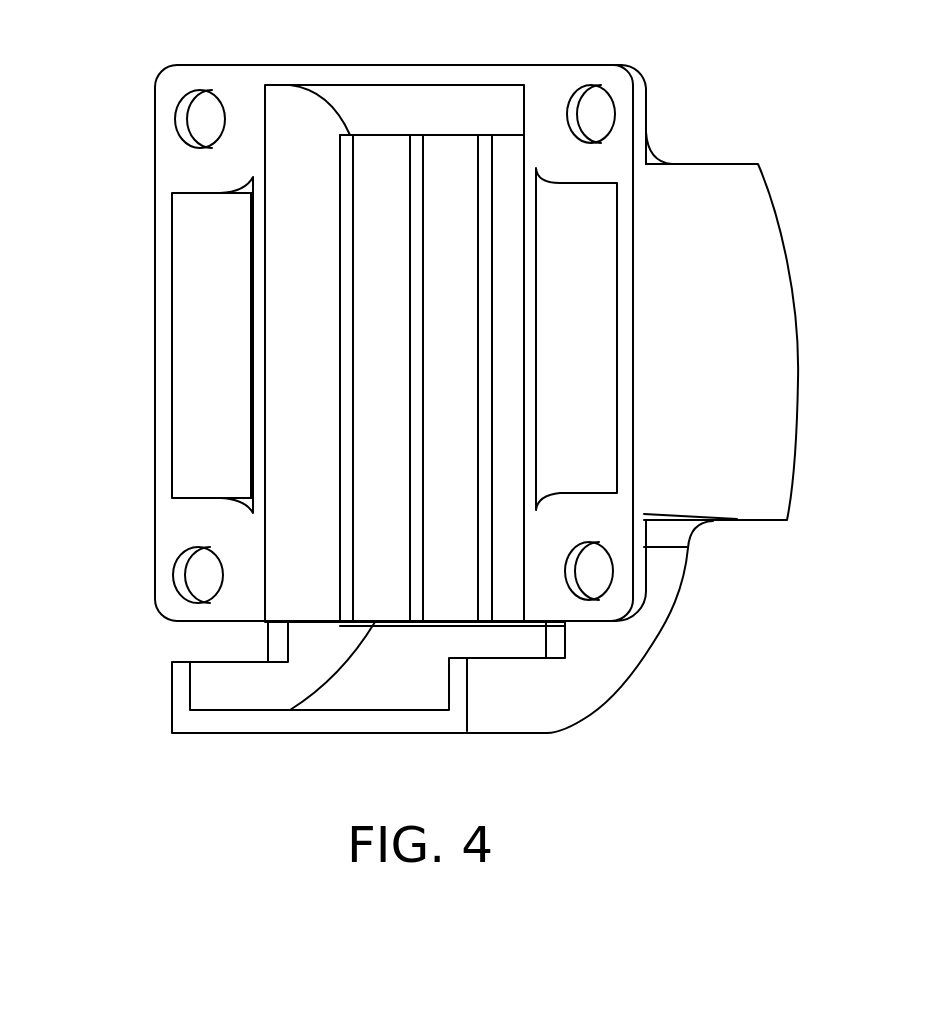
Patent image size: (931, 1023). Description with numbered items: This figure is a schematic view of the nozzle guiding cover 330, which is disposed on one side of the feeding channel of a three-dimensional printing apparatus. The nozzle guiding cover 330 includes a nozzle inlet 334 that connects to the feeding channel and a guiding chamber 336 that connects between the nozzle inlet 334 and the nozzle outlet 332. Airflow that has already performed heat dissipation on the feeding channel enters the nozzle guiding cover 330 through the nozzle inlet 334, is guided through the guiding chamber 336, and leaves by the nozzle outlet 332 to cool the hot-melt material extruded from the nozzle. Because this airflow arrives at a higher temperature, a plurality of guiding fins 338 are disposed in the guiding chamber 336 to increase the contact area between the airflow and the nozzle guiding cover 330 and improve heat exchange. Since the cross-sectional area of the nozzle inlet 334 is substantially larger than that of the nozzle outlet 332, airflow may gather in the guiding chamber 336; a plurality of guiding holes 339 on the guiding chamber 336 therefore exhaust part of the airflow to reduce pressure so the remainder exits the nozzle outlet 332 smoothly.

The nozzle guiding cover 330 is at (838, 788).
The nozzle outlet 332 is at (277, 690).
The nozzle inlet 334 is at (304, 110).
The guiding chamber 336 is at (452, 462).
The guiding fins 338 is at (345, 453).
The guiding holes 339 is at (183, 310).